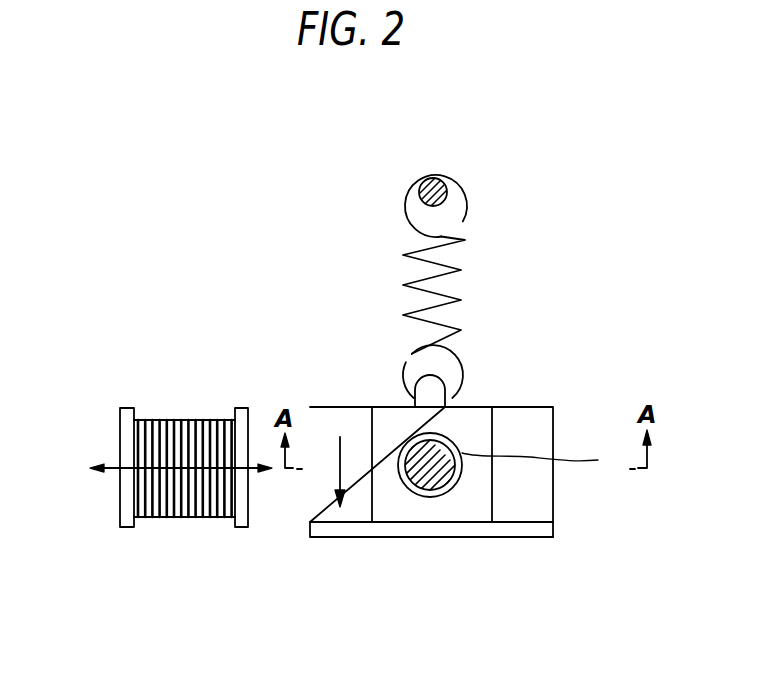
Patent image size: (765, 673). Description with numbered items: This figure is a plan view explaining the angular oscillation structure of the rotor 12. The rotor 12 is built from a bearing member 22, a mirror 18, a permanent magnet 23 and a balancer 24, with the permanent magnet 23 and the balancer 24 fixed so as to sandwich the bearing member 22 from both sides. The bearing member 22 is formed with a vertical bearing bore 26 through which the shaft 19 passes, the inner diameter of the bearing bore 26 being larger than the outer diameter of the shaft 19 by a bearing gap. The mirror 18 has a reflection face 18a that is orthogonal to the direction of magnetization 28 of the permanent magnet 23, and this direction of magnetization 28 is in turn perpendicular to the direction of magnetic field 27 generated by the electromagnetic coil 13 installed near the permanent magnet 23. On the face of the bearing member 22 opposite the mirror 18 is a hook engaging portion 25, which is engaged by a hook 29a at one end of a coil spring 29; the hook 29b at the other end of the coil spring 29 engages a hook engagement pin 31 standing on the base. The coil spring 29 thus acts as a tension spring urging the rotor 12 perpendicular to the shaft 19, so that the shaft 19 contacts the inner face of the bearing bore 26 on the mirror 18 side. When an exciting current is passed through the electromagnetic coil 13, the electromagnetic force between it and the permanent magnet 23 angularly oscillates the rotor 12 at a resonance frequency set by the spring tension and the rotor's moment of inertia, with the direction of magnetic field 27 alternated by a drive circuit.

The rotor 12 is at (572, 343).
The electromagnetic coil 13 is at (177, 420).
The mirror 18 is at (468, 532).
The reflection face 18a is at (525, 540).
The shaft 19 is at (427, 482).
The bearing member 22 is at (472, 423).
The permanent magnet 23 is at (350, 423).
The balancer 24 is at (538, 428).
The hook engaging portion 25 is at (430, 390).
The bearing bore 26 is at (542, 459).
The direction of magnetic field 27 is at (113, 470).
The direction of magnetization 28 is at (337, 477).
The coil spring 29 is at (463, 270).
The hook 29a is at (407, 362).
The hook 29b is at (467, 197).
The hook engagement pin 31 is at (442, 184).